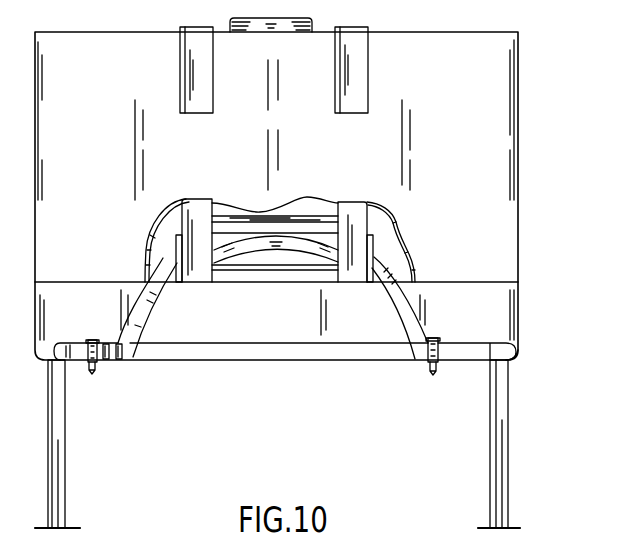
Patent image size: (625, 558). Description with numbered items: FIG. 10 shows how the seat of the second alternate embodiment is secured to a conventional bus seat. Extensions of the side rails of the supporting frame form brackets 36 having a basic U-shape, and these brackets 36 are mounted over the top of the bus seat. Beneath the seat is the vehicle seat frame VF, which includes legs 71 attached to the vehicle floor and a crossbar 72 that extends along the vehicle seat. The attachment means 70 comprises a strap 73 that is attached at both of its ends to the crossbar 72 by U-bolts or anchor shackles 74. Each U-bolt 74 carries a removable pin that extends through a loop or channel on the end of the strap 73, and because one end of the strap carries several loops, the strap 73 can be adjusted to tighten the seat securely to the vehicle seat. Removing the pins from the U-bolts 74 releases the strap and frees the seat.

The bracket 36 is at (196, 31).
The attachment means 70 is at (115, 378).
The legs 71 is at (500, 478).
The crossbar 72 is at (376, 352).
The strap 73 is at (250, 247).
The U-bolts or anchor shackles 74 is at (434, 371).
The vehicle seat frame VF is at (511, 364).